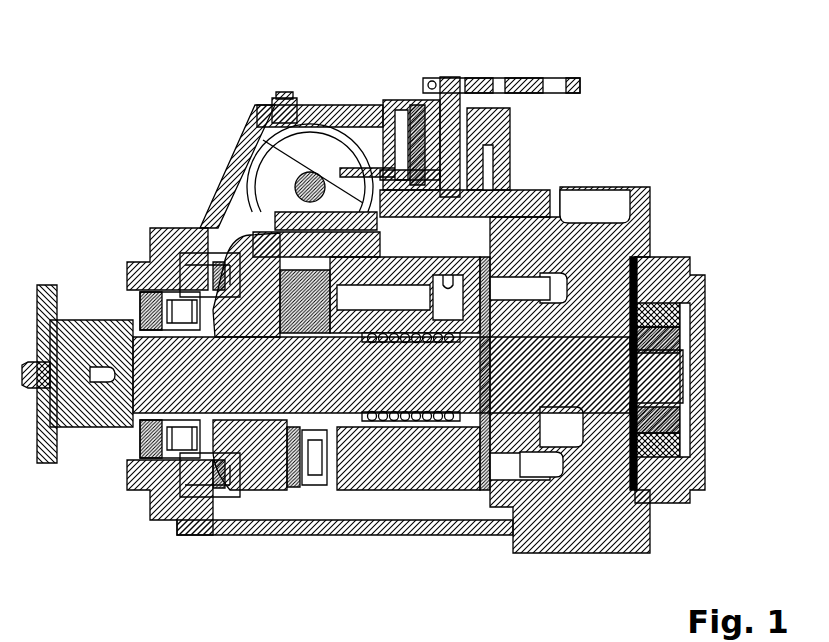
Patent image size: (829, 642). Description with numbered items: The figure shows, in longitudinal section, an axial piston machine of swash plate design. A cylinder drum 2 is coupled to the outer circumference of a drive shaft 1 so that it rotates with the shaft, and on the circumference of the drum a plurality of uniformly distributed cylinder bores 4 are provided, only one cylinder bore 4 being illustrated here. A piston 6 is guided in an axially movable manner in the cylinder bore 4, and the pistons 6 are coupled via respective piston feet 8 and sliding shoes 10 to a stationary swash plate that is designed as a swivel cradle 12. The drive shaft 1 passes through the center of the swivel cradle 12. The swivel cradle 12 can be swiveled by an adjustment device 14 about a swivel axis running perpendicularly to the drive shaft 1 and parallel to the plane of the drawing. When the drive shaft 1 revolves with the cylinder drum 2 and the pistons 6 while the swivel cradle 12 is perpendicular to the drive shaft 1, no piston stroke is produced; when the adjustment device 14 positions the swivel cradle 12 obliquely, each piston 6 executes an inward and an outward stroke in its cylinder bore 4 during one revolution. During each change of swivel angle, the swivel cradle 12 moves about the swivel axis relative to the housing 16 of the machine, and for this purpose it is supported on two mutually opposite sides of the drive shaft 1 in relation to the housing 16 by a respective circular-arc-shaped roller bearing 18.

The drive shaft 1 is at (673, 397).
The cylinder drum 2 is at (410, 470).
The cylinder bore 4 is at (458, 290).
The piston 6 is at (378, 275).
The piston foot 8 is at (327, 453).
The sliding shoe 10 is at (283, 460).
The swivel cradle 12 is at (240, 226).
The adjustment device 14 is at (290, 177).
The housing 16 is at (147, 232).
The circular-arc-shaped roller bearing 18 is at (183, 232).